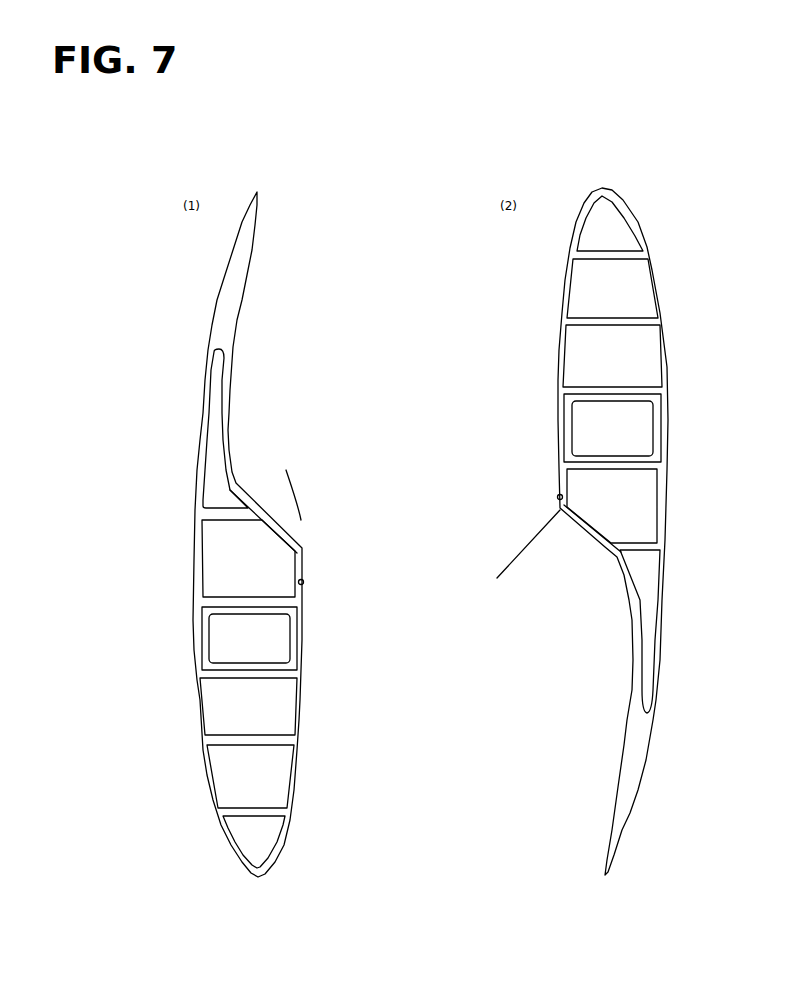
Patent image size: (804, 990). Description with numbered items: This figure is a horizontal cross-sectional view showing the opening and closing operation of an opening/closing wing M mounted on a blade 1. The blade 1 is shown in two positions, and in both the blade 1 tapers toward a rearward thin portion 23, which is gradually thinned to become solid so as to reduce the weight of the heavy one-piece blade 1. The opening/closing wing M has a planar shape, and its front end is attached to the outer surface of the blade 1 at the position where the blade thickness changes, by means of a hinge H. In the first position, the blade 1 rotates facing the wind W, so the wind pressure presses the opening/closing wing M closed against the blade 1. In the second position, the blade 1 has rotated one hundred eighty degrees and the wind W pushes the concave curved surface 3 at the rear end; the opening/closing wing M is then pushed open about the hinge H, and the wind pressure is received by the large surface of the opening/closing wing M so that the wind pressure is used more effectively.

The blade 1 is at (172, 663).
The concave curved surface 3 is at (268, 518).
The rearward thin portion 23 is at (238, 313).
The opening/closing wing M is at (302, 514).
The hinge H is at (304, 583).
The wind W is at (264, 918).